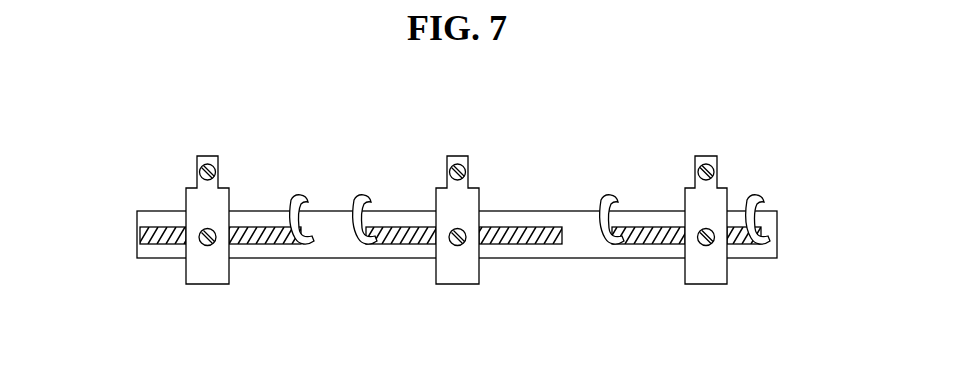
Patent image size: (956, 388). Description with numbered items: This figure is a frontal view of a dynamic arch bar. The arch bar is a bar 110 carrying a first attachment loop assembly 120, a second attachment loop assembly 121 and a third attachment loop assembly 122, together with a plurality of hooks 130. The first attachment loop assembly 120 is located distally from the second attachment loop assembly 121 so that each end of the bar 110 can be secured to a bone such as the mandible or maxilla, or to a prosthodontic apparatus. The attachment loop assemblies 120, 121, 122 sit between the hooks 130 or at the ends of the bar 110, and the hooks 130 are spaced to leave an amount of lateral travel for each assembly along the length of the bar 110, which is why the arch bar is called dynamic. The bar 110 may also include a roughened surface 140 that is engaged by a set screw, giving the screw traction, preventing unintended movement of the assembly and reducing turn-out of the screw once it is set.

The bar 110 is at (165, 259).
The first attachment loop assembly 120 is at (208, 155).
The second attachment loop assembly 121 is at (707, 155).
The third attachment loop assembly 122 is at (457, 155).
The hooks 130 is at (357, 193).
The roughened surface 140 is at (160, 224).